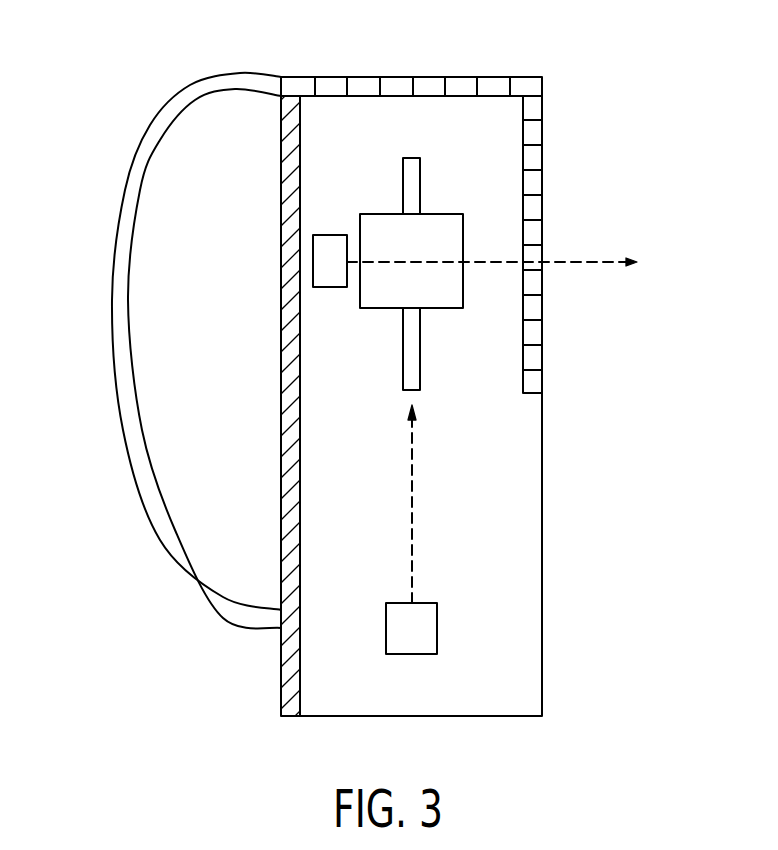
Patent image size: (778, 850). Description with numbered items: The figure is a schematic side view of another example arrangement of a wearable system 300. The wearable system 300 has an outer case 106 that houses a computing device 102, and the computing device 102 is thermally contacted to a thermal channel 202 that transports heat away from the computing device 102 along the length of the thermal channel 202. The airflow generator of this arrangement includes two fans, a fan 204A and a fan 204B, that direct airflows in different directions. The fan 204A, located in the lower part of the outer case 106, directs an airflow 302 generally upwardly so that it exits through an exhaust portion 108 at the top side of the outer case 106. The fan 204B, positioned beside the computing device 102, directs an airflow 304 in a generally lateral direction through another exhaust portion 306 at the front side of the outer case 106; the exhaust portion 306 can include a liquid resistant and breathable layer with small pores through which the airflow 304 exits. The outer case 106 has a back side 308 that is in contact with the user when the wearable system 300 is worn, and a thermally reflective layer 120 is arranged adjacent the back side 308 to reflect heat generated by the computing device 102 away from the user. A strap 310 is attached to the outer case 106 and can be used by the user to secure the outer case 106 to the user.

The wearable system 300 is at (360, 368).
The outer case 106 is at (542, 505).
The exhaust portion 108 is at (424, 88).
The exhaust portion 306 is at (533, 158).
The thermally reflective layer 120 is at (292, 398).
The back side 308 is at (281, 322).
The strap 310 is at (153, 118).
The thermal channel 202 is at (408, 350).
The computing device 102 is at (445, 293).
The fan 204B is at (330, 235).
The fan 204A is at (412, 656).
The airflow 304 is at (582, 260).
The airflow 302 is at (412, 508).